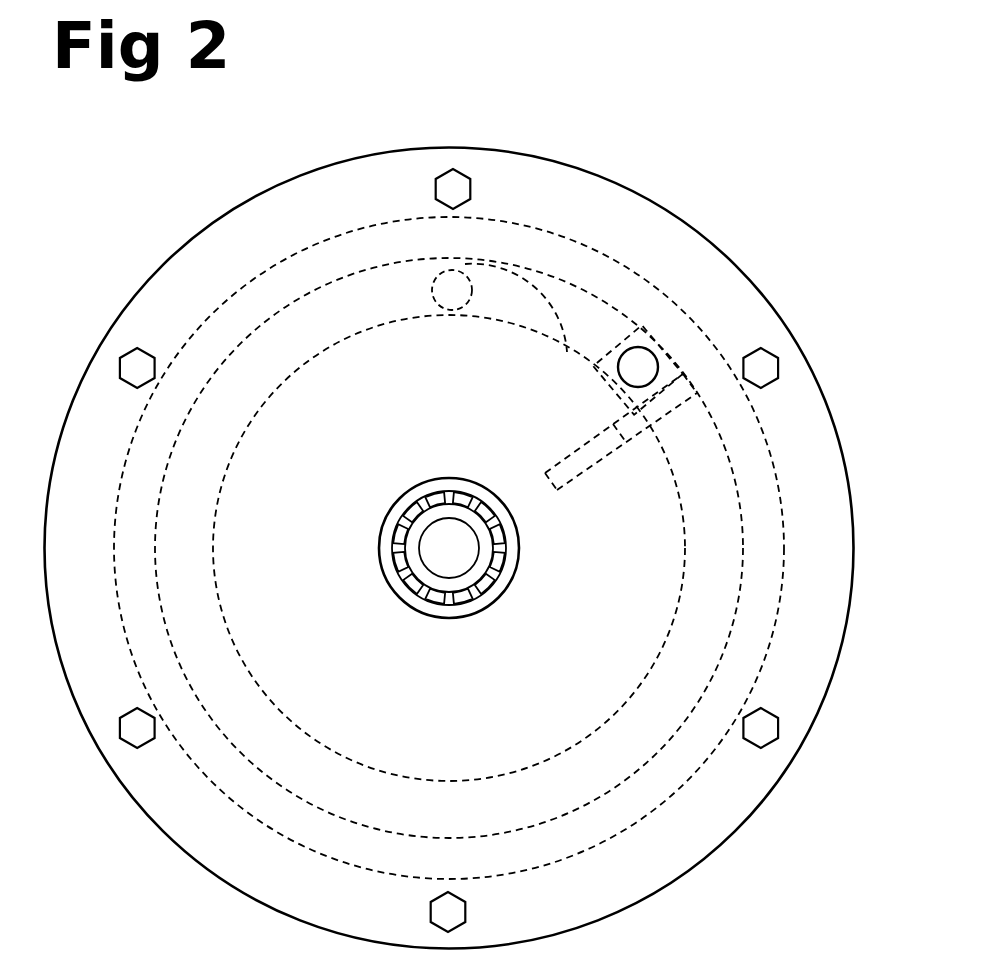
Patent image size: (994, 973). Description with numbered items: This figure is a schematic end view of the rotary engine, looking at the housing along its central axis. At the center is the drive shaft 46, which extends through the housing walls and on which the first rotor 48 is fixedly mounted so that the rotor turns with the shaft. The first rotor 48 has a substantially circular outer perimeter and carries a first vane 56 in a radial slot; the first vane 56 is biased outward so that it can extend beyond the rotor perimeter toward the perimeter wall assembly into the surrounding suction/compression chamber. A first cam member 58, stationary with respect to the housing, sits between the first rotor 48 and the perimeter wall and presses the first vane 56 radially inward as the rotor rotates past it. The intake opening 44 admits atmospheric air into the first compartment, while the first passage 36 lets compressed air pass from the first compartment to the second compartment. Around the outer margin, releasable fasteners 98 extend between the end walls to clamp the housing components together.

The releasable fasteners 98 is at (453, 187).
The first passage 36 is at (462, 272).
The first cam member 58 is at (567, 300).
The intake opening 44 is at (643, 345).
The first vane 56 is at (673, 392).
The first rotor 48 is at (308, 657).
The drive shaft 46 is at (447, 560).